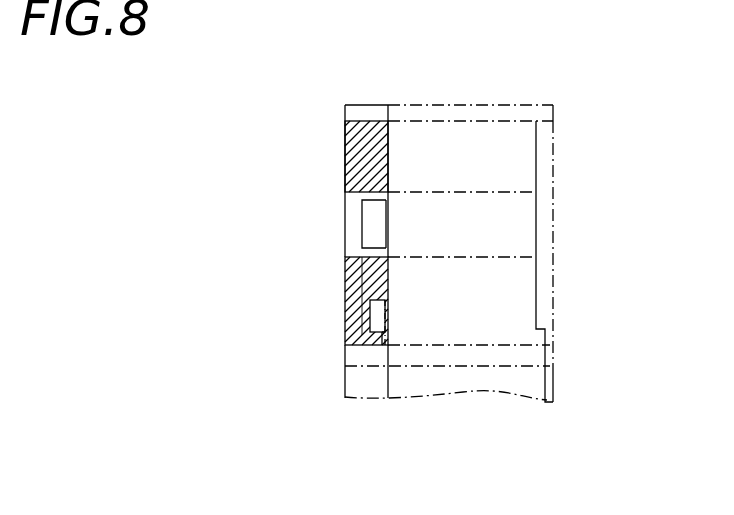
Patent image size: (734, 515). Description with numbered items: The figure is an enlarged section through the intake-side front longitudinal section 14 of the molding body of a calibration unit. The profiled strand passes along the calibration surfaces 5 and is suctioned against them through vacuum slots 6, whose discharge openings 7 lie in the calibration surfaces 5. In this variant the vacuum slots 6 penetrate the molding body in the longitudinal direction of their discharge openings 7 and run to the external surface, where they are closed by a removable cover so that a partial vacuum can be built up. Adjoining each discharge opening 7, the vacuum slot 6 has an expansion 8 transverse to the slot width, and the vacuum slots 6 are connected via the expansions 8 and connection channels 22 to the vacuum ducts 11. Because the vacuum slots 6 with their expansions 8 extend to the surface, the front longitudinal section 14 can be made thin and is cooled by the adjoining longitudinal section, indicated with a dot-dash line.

The front longitudinal section 14 is at (358, 148).
The vacuum duct 11 is at (356, 216).
The connection channel 22 is at (377, 232).
The expansion 8 is at (378, 313).
The vacuum slot 6 is at (385, 337).
The calibration surface 5 is at (357, 345).
The discharge opening 7 is at (383, 345).